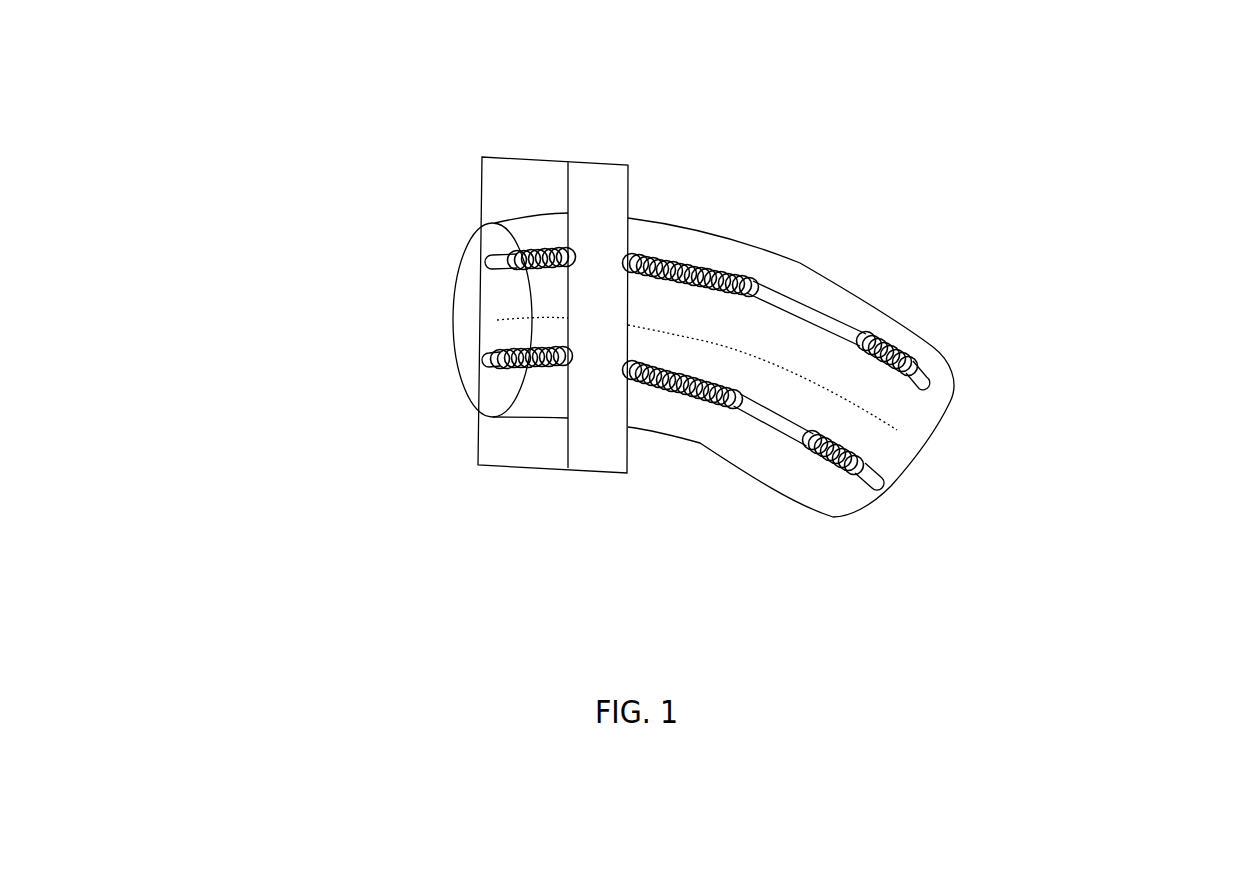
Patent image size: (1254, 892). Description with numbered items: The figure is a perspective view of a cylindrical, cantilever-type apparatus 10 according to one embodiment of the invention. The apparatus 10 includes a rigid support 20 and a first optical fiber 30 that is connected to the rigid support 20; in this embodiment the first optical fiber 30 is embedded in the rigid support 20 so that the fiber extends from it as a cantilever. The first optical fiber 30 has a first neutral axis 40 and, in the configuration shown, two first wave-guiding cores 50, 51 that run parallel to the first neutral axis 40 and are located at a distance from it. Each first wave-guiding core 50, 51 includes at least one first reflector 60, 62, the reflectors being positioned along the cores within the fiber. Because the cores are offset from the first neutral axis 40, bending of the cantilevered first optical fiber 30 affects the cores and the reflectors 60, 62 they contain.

The cylindrical, cantilever-type apparatus 10 is at (614, 513).
The rigid support 20 is at (515, 190).
The first optical fiber 30 is at (456, 272).
The first neutral axis 40 is at (898, 447).
The first wave-guiding core 50 is at (780, 302).
The first wave-guiding core 51 is at (765, 415).
The first reflector 60 is at (897, 348).
The first reflector 62 is at (678, 257).